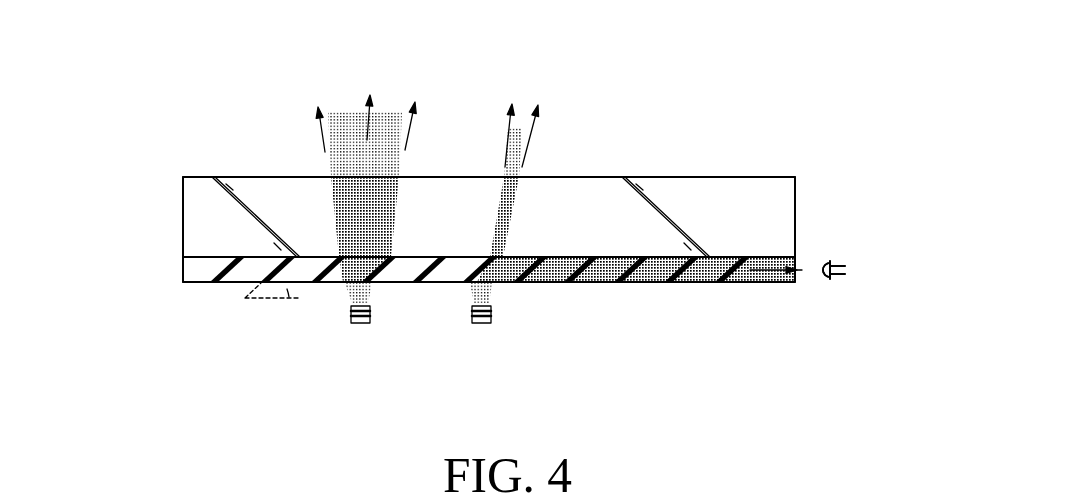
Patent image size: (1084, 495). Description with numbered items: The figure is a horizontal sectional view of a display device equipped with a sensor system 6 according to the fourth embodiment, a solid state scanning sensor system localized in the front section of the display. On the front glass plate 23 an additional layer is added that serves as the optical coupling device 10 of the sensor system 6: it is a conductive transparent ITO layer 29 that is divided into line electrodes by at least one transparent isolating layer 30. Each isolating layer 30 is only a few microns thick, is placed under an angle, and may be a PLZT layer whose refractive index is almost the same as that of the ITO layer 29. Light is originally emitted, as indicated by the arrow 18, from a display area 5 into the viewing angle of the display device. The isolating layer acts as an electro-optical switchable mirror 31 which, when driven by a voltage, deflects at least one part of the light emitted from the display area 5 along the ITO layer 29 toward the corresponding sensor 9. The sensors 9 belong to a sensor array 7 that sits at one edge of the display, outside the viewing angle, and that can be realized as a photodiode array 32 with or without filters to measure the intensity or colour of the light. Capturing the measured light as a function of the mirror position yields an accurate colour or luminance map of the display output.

The display area 5 is at (359, 323).
The sensor system 6 is at (163, 255).
The sensor array 7 is at (835, 290).
The sensor 9 is at (823, 265).
The coupling device 10 is at (758, 290).
The originally emitted light 18 is at (322, 140).
The front glass plate 23 is at (690, 192).
The ITO layer 29 is at (192, 275).
The isolating layer 30 is at (228, 275).
The electro-optical switchable mirror 31 is at (492, 282).
The photodiode array 32 is at (834, 270).